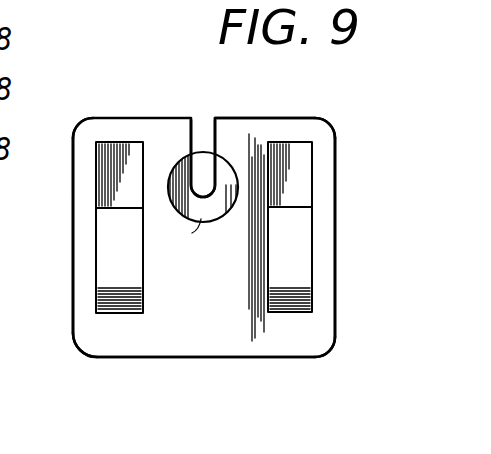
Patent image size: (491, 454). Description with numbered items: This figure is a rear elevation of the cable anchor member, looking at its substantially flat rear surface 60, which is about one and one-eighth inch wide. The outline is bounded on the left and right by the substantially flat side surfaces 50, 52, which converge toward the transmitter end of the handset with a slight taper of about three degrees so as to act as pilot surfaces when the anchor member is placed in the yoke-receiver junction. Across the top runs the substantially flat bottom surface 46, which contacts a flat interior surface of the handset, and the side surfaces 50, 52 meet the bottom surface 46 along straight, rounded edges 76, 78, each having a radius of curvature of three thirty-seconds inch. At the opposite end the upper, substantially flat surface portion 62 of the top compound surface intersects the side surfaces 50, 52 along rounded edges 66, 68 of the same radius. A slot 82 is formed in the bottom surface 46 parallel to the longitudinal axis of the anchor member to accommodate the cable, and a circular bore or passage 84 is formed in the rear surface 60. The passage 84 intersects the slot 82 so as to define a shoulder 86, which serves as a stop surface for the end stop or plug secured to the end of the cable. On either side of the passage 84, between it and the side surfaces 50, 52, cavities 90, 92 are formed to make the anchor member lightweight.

The bottom surface 46 is at (308, 101).
The side surface 50 is at (72, 223).
The side surface 52 is at (337, 212).
The rear surface 60 is at (212, 326).
The upper flat surface portion 62 is at (196, 358).
The rounded edge 66 is at (80, 350).
The rounded edge 68 is at (336, 347).
The rounded edge 76 is at (91, 101).
The rounded edge 78 is at (323, 118).
The slot 82 is at (208, 123).
The circular bore or passage 84 is at (183, 151).
The shoulder 86 is at (199, 220).
The cavity 90 is at (104, 250).
The cavity 92 is at (295, 268).